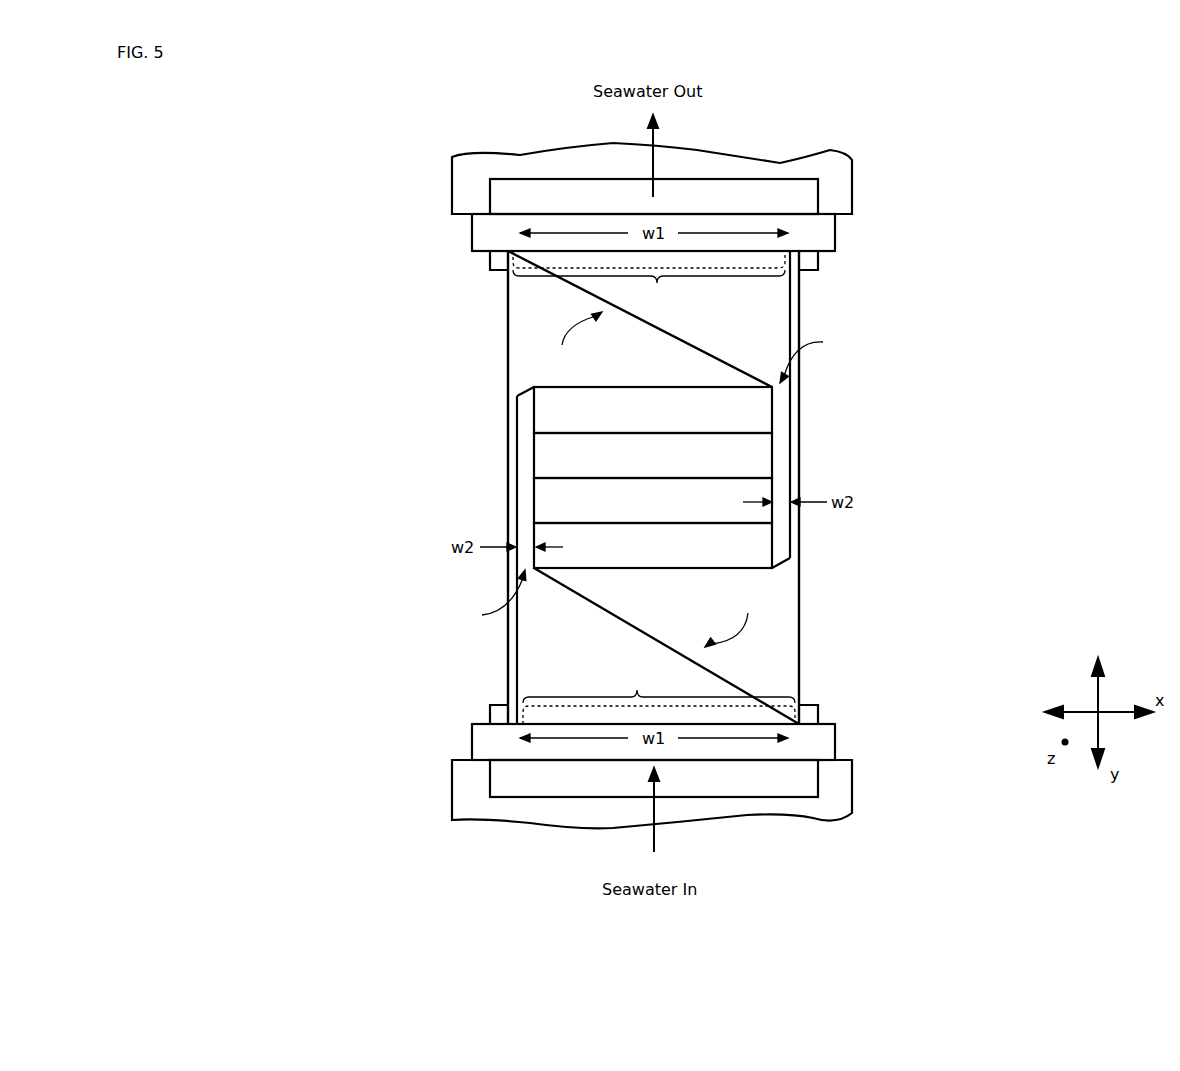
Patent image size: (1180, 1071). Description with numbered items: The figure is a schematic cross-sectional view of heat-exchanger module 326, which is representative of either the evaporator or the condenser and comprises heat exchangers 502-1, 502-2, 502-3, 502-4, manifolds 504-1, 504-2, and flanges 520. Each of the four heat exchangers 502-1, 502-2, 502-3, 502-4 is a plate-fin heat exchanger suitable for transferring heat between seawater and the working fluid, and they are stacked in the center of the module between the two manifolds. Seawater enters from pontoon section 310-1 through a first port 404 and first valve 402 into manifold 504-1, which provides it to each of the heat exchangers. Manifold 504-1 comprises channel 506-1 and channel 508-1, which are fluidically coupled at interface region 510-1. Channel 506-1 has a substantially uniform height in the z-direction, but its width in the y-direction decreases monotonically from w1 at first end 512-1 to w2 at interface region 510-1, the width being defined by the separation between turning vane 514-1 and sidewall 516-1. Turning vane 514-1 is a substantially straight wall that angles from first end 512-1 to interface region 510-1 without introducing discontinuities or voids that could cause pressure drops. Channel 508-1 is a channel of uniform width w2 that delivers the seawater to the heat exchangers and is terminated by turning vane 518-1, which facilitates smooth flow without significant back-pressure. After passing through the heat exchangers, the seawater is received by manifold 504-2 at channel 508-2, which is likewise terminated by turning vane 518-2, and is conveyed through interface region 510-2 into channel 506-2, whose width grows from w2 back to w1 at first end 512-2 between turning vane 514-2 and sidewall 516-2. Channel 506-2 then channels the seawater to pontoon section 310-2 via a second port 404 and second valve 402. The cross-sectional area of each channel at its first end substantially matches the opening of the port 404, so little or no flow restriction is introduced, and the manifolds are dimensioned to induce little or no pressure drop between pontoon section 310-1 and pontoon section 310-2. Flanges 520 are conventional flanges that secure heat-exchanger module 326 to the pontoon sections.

The heat-exchanger module 326 is at (320, 283).
The pontoon section 310-1 is at (853, 783).
The pontoon section 310-2 is at (452, 187).
The valve 402 is at (785, 206).
The port 404 is at (837, 236).
The heat exchanger 502-1 is at (677, 419).
The heat exchanger 502-2 is at (677, 464).
The heat exchanger 502-3 is at (677, 509).
The heat exchanger 502-4 is at (677, 554).
The manifold 504-1 is at (737, 620).
The manifold 504-2 is at (568, 339).
The channel 506-1 is at (597, 652).
The channel 506-2 is at (760, 336).
The channel 508-1 is at (525, 505).
The channel 508-2 is at (778, 462).
The interface region 510-1 is at (476, 597).
The interface region 510-2 is at (830, 358).
The first end 512-1 is at (659, 694).
The first end 512-2 is at (649, 281).
The turning vane 514-1 is at (723, 678).
The turning vane 514-2 is at (585, 293).
The sidewall 516-1 is at (508, 647).
The sidewall 516-2 is at (798, 330).
The turning vane 518-1 is at (525, 393).
The turning vane 518-2 is at (780, 563).
The flange 520 is at (498, 258).